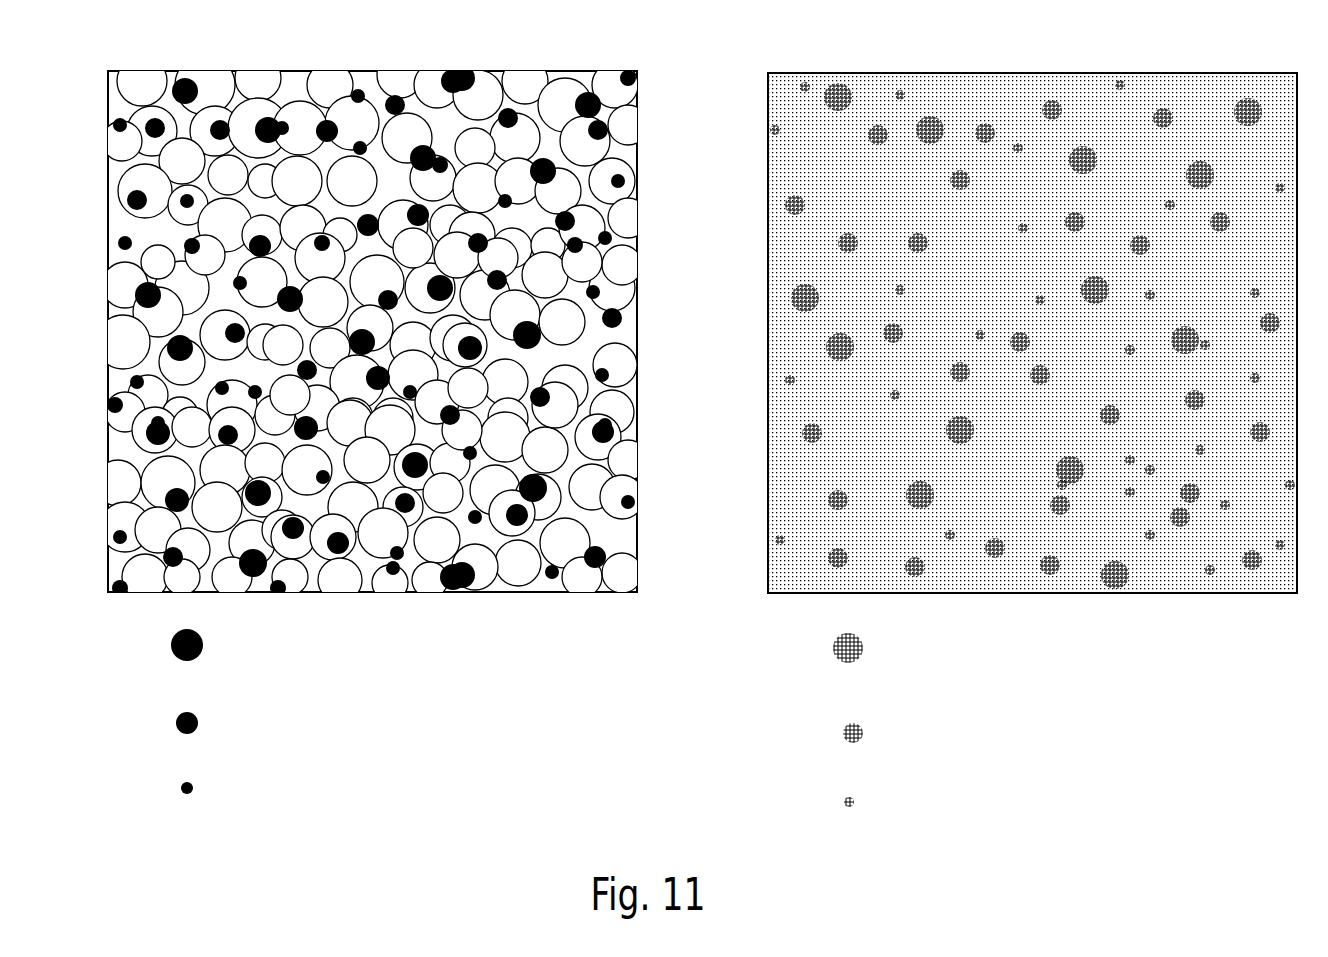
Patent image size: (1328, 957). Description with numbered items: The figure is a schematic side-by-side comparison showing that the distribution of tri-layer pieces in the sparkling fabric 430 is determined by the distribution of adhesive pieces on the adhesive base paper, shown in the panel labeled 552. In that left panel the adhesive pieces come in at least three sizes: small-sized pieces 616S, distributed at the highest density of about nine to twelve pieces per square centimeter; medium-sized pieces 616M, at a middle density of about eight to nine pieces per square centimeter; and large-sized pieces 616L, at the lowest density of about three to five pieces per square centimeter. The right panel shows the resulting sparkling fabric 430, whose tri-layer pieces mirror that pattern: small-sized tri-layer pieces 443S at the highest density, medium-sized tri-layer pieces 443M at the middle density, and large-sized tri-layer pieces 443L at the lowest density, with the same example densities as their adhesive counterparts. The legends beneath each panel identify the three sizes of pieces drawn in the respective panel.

The spatial distribution of nanoparticles (first material) 552 is at (360, 33).
The sparkling fabric 430 is at (1075, 25).
The large-sized pieces 616L is at (276, 656).
The medium-sized pieces 616M is at (280, 730).
The small-sized pieces 616S is at (276, 800).
The large-sized tri-layer pieces 443L is at (956, 656).
The medium-sized tri-layer pieces 443M is at (960, 730).
The small-sized tri-layer pieces 443S is at (956, 800).